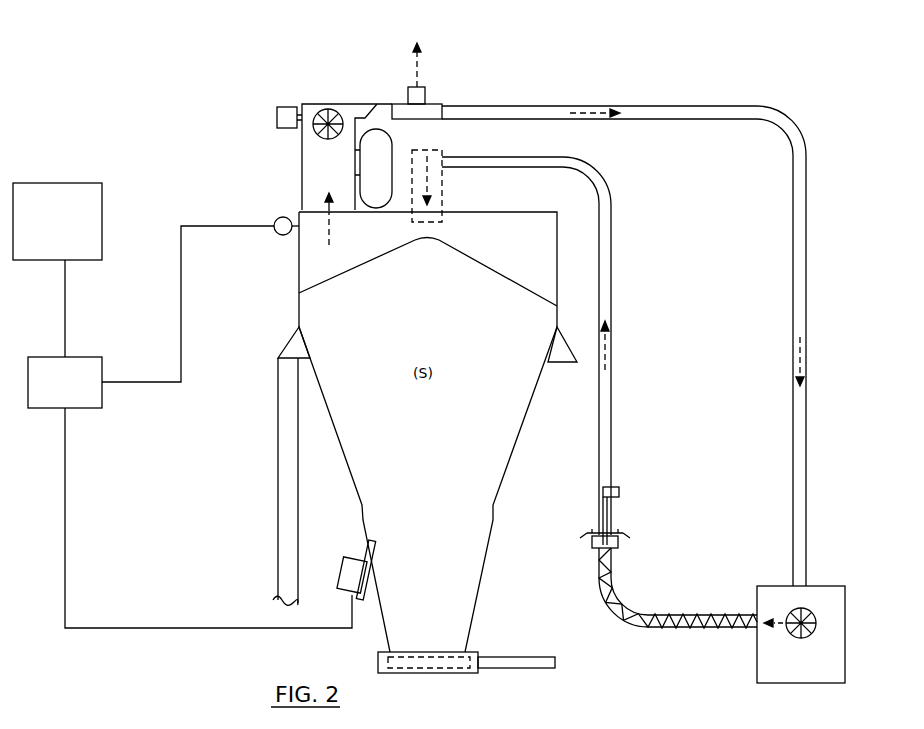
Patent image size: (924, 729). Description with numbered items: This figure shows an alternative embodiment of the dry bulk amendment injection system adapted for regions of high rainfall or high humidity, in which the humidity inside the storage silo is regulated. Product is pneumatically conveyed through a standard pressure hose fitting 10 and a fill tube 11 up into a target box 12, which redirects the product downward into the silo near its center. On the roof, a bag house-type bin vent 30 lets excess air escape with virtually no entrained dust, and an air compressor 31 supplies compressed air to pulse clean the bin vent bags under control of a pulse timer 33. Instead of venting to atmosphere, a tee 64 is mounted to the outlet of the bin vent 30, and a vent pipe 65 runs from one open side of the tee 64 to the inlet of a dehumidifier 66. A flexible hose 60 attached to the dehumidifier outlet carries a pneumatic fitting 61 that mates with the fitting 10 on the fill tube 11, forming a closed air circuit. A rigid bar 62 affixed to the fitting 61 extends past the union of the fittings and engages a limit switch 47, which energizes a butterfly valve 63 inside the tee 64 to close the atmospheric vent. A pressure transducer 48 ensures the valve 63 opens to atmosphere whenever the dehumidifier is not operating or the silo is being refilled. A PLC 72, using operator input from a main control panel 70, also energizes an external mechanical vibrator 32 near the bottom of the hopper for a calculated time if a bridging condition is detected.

The pressure hose fitting 10 is at (620, 530).
The fill tube 11 is at (612, 283).
The target box 12 is at (442, 150).
The bin vent 30 is at (302, 152).
The air compressor 31 is at (392, 152).
The external mechanical vibrator 32 is at (340, 558).
The pulse timer 33 is at (283, 107).
The limit switch 47 is at (619, 488).
The pressure transducer 48 is at (280, 236).
The flexible hose 60 is at (670, 616).
The pneumatic fitting 61 is at (618, 548).
The rigid bar 62 is at (603, 518).
The valve 63 is at (422, 104).
The tee 64 is at (400, 104).
The vent pipe 65 is at (697, 105).
The dehumidifier 66 is at (845, 610).
The main control panel 70 is at (104, 205).
The PLC 72 is at (104, 375).